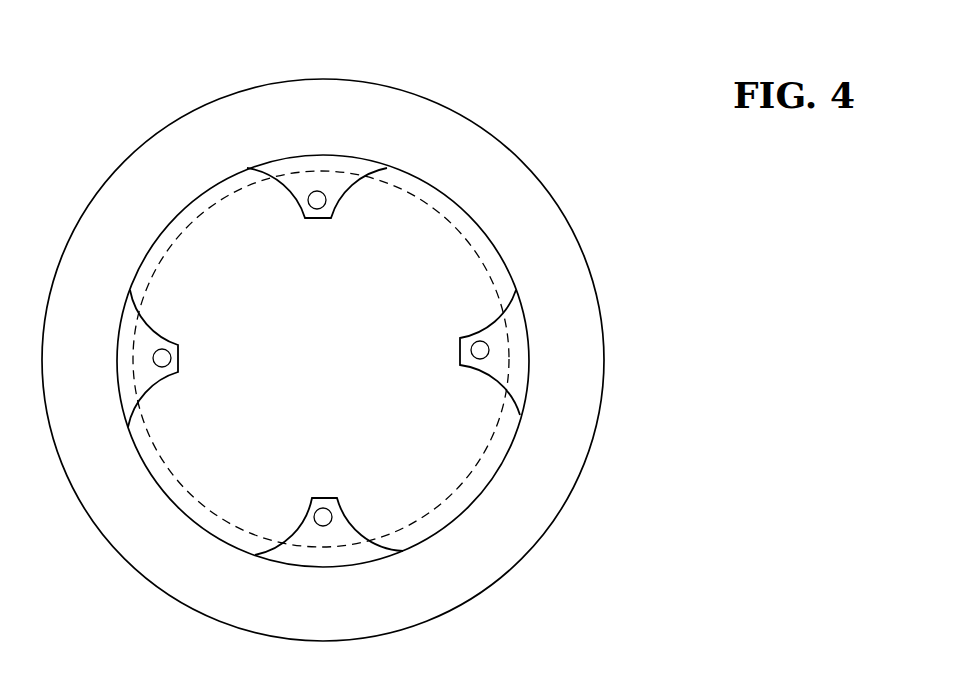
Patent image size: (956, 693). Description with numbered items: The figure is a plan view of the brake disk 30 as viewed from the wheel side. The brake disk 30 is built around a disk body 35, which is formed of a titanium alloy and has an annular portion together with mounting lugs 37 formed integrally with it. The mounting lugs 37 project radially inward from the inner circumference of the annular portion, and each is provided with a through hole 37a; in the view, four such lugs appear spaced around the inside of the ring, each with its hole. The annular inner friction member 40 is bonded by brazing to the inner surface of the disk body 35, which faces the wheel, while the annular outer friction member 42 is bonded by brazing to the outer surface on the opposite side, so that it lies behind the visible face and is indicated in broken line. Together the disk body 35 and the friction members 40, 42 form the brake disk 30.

The brake disk 30 is at (365, 354).
The annular inner friction member 40 is at (507, 197).
The disk body 35 is at (395, 361).
The mounting lugs 37 is at (153, 341).
The through hole 37a is at (315, 218).
The annular outer friction member 42 is at (513, 347).